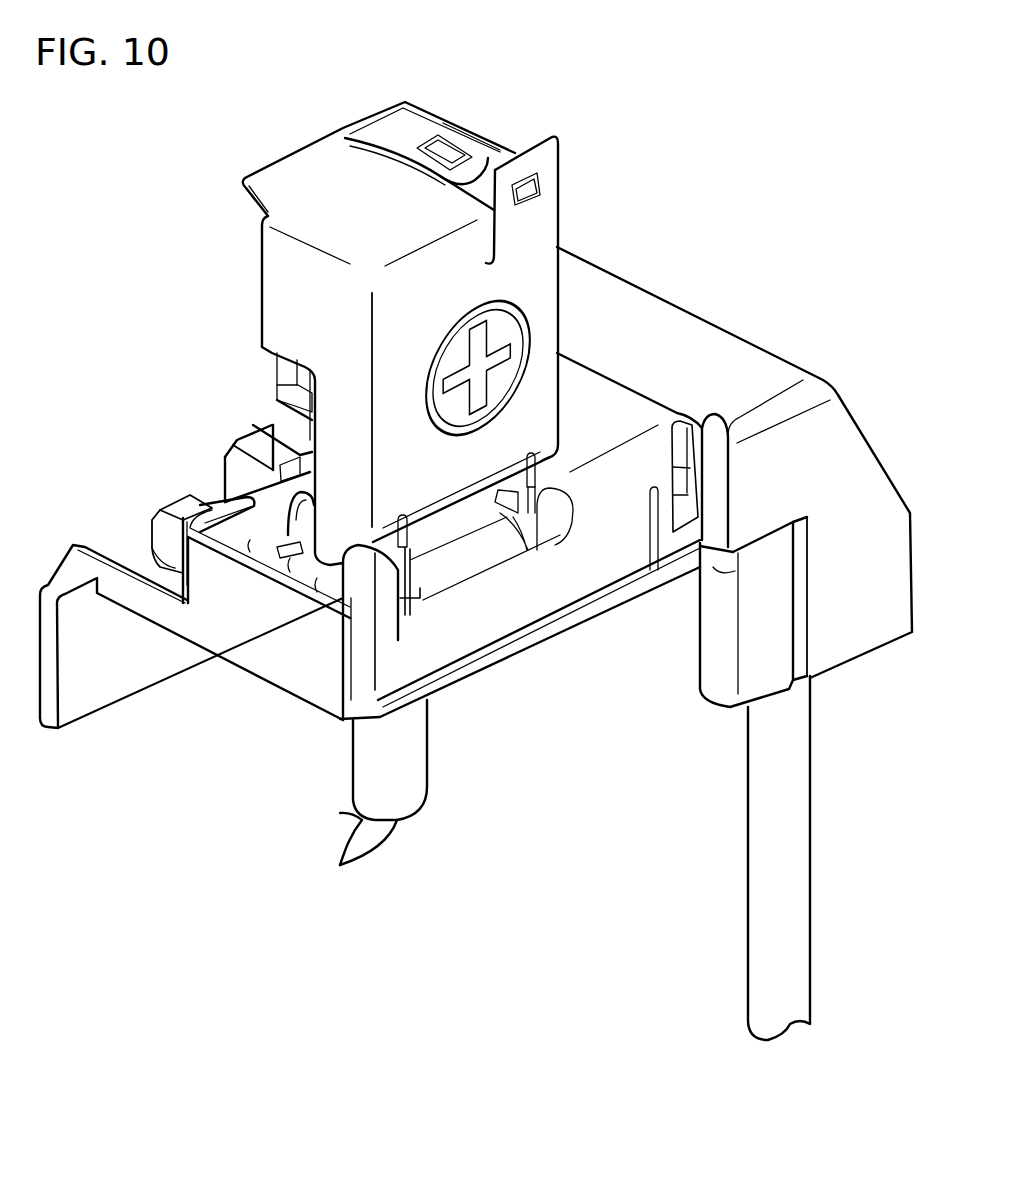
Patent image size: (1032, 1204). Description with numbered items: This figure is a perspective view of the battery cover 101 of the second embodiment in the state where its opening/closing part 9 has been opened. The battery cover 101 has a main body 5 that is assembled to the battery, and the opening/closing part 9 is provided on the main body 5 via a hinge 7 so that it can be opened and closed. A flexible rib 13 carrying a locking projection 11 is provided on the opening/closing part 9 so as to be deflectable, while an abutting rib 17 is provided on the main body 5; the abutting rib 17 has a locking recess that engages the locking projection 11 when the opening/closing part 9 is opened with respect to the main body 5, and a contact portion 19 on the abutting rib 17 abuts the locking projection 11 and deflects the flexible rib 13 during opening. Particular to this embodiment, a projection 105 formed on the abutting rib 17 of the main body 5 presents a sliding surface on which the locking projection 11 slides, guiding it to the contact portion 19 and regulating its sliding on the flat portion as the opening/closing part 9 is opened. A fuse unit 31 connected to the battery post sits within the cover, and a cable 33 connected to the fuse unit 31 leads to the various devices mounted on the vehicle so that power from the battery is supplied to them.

The battery cover 101 is at (582, 207).
The opening/closing part 9 is at (410, 237).
The main body 5 is at (593, 397).
The fuse unit 31 is at (186, 472).
The locking projection 11 is at (334, 637).
The contact portion 19 is at (353, 722).
The hinge 7 is at (453, 528).
The projection 105 is at (420, 585).
The flexible rib 13 is at (572, 522).
The abutting rib 17 is at (560, 520).
The cable 33 is at (410, 777).